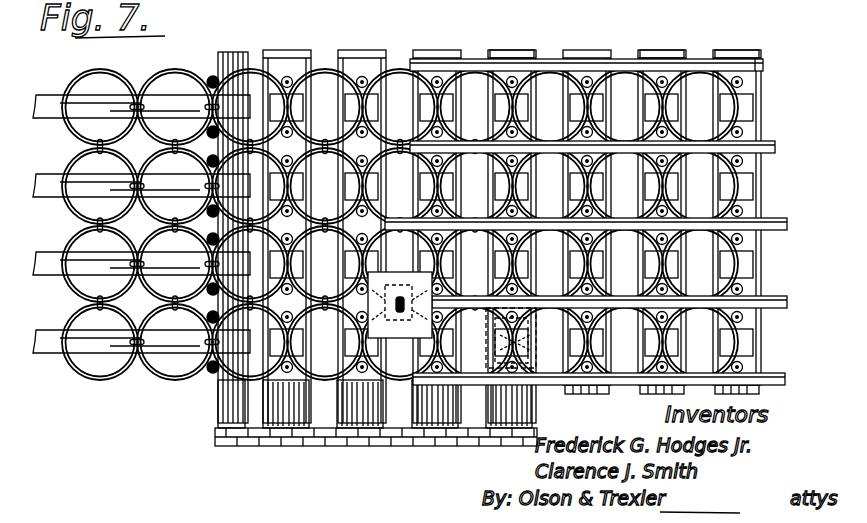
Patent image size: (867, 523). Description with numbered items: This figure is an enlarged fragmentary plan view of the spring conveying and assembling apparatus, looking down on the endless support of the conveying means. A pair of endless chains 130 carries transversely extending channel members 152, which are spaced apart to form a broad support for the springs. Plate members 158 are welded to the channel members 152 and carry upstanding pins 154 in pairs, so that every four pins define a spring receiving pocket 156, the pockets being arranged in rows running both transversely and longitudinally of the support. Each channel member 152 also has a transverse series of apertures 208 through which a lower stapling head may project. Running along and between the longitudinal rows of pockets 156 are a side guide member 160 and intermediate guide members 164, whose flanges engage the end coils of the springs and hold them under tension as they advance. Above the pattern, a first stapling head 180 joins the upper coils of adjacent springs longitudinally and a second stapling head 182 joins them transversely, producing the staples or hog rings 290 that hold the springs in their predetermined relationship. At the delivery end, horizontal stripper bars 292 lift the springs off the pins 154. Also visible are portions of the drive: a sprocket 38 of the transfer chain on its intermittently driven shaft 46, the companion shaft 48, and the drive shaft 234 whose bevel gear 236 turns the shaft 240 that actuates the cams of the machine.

The sprocket 38 is at (633, 170).
The shaft 46 is at (640, 0).
The shaft 48 is at (522, 0).
The endless chains 130 is at (393, 446).
The channel members 152 is at (277, 410).
The upstanding pins 154 is at (677, 200).
The pockets 156 is at (690, 68).
The plate members 158 is at (362, 58).
The guide member 160 is at (505, 372).
The intermediate guide members 164 is at (747, 287).
The first stapling head 180 is at (562, 383).
The second stapling head 182 is at (398, 338).
The apertures 208 is at (333, 100).
The drive shaft 234 is at (690, 0).
The bevel gear 236 is at (758, 3).
The shaft 240 is at (133, 73).
The staples or hog rings 290 is at (187, 360).
The stripper bars 292 is at (53, 119).